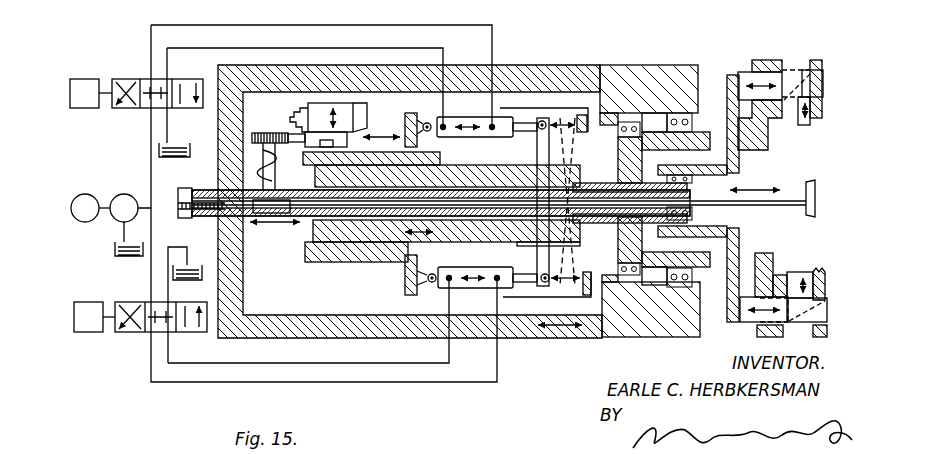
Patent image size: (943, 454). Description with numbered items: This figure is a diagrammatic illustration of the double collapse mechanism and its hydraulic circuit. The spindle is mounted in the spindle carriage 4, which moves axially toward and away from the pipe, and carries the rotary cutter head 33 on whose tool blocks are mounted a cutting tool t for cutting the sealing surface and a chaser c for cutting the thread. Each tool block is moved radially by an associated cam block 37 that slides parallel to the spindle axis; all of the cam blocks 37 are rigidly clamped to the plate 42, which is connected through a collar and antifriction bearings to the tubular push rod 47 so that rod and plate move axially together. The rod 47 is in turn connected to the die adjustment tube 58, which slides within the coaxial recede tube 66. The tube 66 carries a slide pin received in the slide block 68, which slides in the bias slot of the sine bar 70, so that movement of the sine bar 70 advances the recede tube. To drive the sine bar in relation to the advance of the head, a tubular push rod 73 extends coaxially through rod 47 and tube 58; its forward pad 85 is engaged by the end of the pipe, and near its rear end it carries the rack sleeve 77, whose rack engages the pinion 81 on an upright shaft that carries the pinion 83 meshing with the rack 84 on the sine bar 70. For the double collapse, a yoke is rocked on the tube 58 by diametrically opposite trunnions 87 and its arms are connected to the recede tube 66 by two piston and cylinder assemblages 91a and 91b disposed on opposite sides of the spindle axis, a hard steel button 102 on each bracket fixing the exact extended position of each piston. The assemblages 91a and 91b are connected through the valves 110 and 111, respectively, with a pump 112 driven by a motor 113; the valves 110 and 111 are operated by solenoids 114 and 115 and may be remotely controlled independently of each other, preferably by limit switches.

The valve 110 is at (130, 79).
The solenoid 114 is at (82, 108).
The valve 111 is at (130, 332).
The solenoid 115 is at (88, 302).
The motor 113 is at (88, 194).
The pump 112 is at (117, 219).
The spindle carriage 4 is at (592, 338).
The die adjustment tube 58 is at (313, 238).
The recede tube 66 is at (352, 262).
The trunnions 87 is at (500, 242).
The rack sleeve 77 is at (212, 190).
The tubular push rod 73 is at (757, 208).
The pad 85 is at (815, 183).
The pinion 81 is at (250, 213).
The tubular push rod 47 is at (603, 232).
The pinion 83 is at (255, 133).
The sine bar 70 is at (352, 106).
The rack 84 is at (310, 106).
The slide block 68 is at (350, 135).
The piston and cylinder assemblage 91a is at (462, 137).
The piston and cylinder assemblage 91b is at (435, 290).
The hard steel button 102 is at (572, 118).
The plate 42 is at (727, 75).
The cam block 37 is at (745, 72).
The rotary cutter head 33 is at (780, 56).
The cutting tool t is at (805, 122).
The chaser c is at (800, 268).